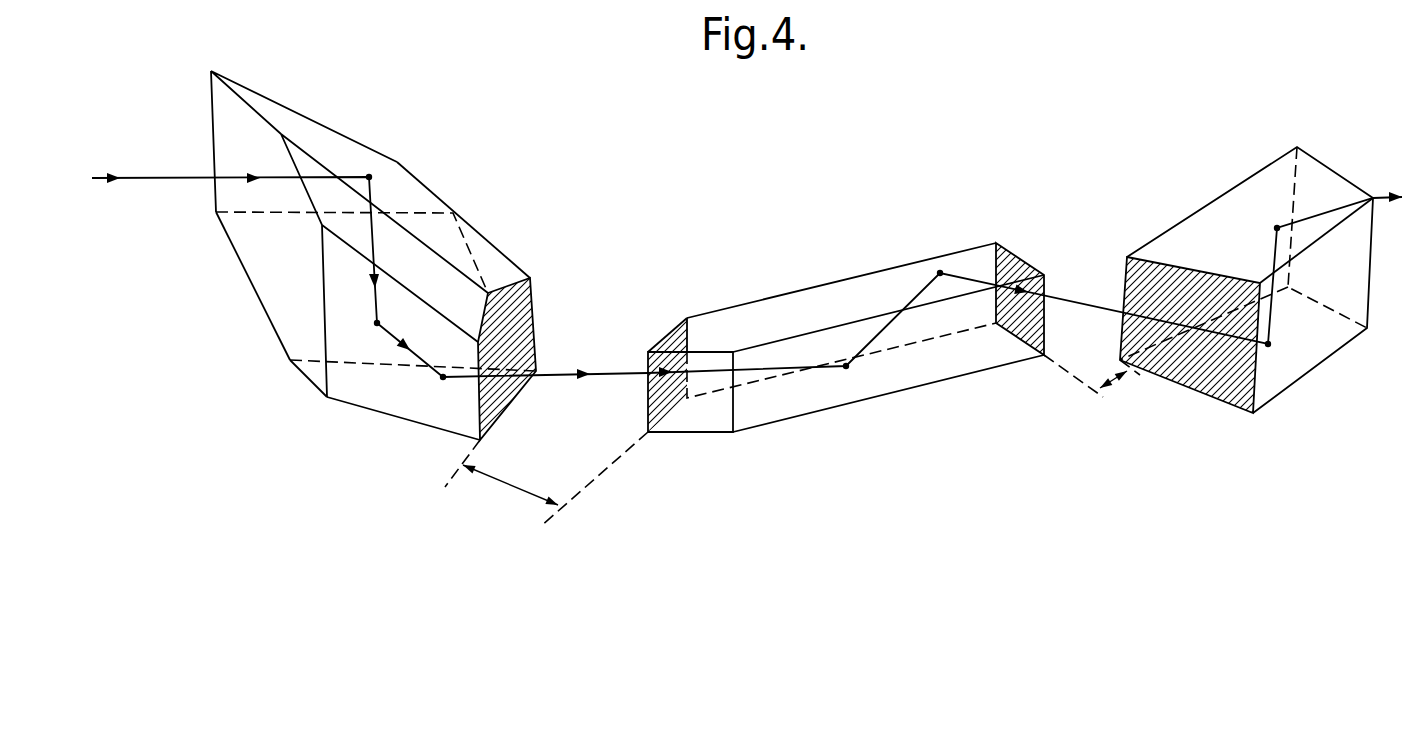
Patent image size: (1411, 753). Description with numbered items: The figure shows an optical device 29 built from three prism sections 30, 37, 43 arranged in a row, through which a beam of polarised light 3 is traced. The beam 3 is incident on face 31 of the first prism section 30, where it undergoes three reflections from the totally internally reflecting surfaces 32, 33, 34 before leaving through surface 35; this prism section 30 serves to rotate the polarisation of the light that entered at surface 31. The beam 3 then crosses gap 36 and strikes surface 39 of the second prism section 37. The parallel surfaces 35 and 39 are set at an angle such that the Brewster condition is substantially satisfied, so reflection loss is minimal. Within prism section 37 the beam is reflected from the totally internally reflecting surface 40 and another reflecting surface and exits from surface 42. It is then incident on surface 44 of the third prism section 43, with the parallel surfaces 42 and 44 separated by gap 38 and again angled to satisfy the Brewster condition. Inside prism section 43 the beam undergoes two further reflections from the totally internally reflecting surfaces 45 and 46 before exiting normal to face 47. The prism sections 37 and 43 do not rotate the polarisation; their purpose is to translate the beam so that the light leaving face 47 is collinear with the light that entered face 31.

The beam of polarised light 3 is at (152, 182).
The optical device 29 is at (777, 499).
The prism section 30 is at (361, 130).
The face 31 is at (266, 262).
The totally internally reflecting surface 32 is at (395, 180).
The totally internally reflecting surface 33 is at (295, 322).
The totally internally reflecting surface 34 is at (393, 388).
The surface 35 is at (521, 303).
The gap 36 is at (546, 479).
The prism section 37 is at (847, 262).
The gap 38 is at (1125, 383).
The surface 39 is at (675, 336).
The totally internally reflecting surface 40 is at (905, 372).
The surface 42 is at (1018, 257).
The prism section 43 is at (1194, 185).
The surface 44 is at (1193, 380).
The totally internally reflecting surface 45 is at (1297, 352).
The totally internally reflecting surface 46 is at (1270, 188).
The face 47 is at (910, 278).